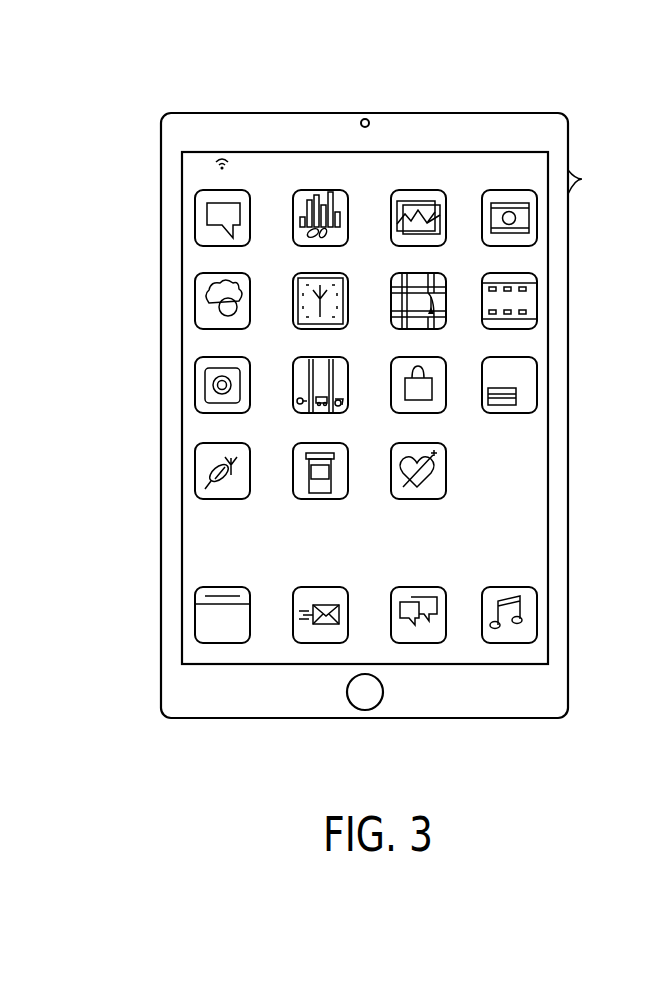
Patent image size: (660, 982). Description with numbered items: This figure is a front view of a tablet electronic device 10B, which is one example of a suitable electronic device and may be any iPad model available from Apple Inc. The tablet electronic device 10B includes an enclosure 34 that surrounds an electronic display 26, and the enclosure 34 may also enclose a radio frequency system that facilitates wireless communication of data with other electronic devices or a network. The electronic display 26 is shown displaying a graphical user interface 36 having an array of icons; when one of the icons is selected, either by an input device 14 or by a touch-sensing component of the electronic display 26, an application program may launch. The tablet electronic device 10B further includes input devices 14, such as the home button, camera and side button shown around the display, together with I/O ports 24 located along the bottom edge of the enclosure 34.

The tablet electronic device 10B is at (171, 68).
The input devices 14 is at (506, 113).
The I/O ports 24 is at (200, 720).
The electronic display 26 is at (548, 467).
The enclosure 34 is at (568, 362).
The graphical user interface 36 is at (526, 551).